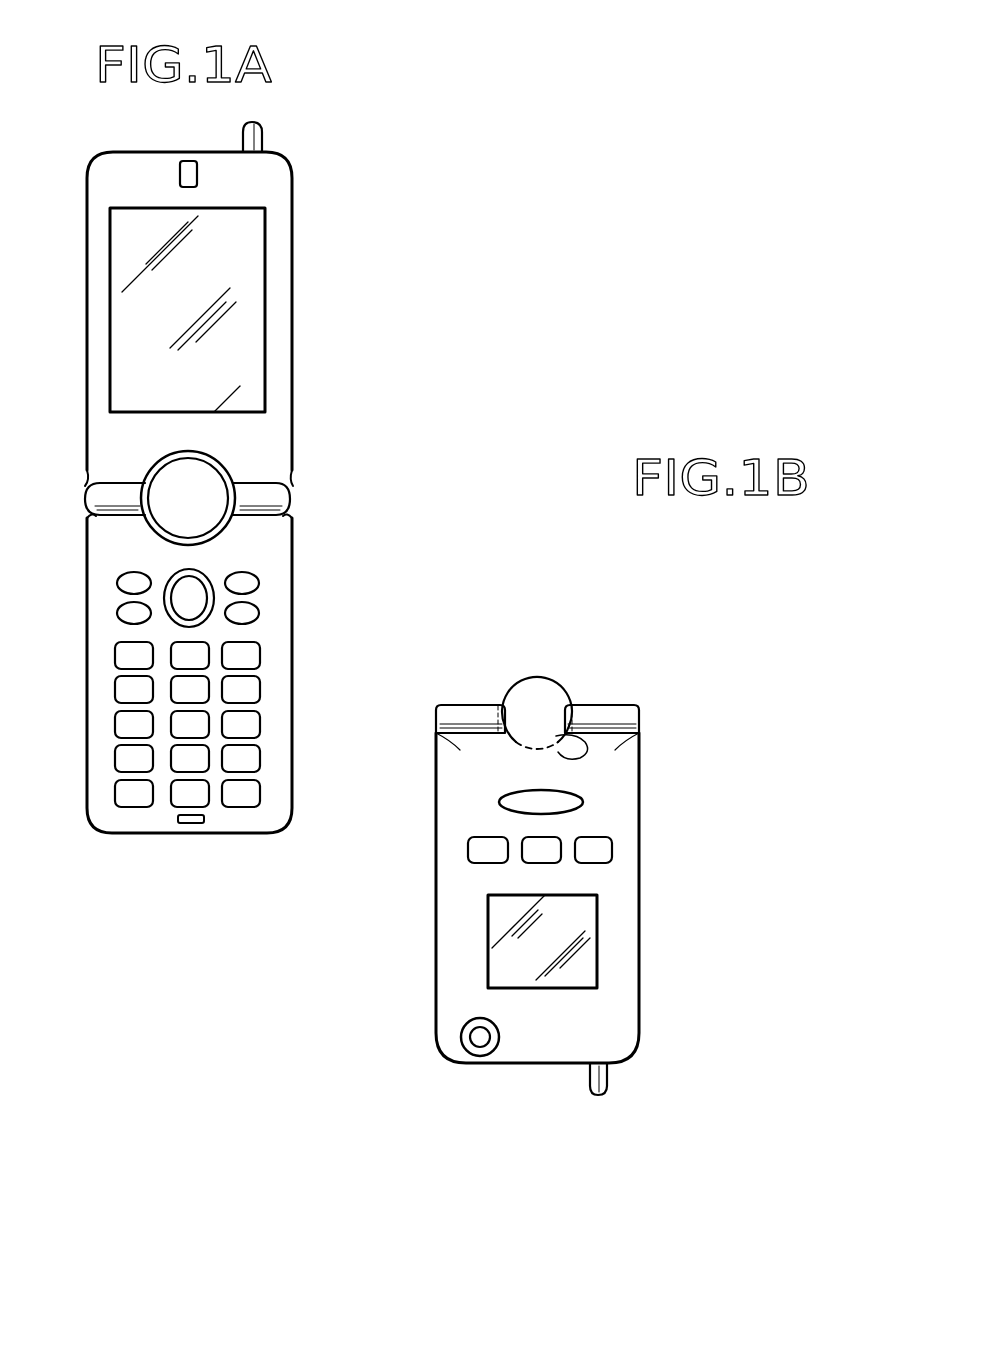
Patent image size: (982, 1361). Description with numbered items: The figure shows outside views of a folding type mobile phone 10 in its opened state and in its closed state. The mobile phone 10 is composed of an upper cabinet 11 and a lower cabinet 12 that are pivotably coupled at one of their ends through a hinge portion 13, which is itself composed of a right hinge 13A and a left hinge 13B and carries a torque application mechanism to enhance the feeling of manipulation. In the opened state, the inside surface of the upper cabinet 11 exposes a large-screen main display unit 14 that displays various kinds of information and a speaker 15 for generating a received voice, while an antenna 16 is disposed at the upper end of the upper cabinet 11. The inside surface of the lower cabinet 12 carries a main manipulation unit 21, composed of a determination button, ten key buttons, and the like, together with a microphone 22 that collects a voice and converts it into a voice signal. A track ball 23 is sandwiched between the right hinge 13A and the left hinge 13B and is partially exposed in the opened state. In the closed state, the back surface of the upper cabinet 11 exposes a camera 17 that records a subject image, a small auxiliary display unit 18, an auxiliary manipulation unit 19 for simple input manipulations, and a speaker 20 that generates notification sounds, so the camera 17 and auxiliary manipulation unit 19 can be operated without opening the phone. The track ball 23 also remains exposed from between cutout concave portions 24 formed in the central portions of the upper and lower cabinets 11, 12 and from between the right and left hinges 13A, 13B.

In FIG. 1A, the mobile phone 10 is at (372, 126).
In FIG. 1A, the upper cabinet 11 is at (293, 299).
In FIG. 1B, the upper cabinet 11 is at (436, 822).
In FIG. 1A, the lower cabinet 12 is at (223, 822).
In FIG. 1B, the hinge portion 13 is at (650, 677).
In FIG. 1A, the right hinge 13A is at (290, 498).
In FIG. 1B, the right hinge 13A is at (626, 714).
In FIG. 1A, the left hinge 13B is at (95, 499).
In FIG. 1B, the left hinge 13B is at (438, 704).
In FIG. 1A, the main display unit 14 is at (247, 230).
In FIG. 1A, the speaker 15 is at (198, 173).
In FIG. 1A, the antenna 16 is at (264, 134).
In FIG. 1B, the antenna 16 is at (608, 1080).
In FIG. 1B, the camera 17 is at (481, 1050).
In FIG. 1B, the auxiliary display unit 18 is at (584, 944).
In FIG. 1B, the auxiliary manipulation unit 19 is at (606, 860).
In FIG. 1B, the speaker 20 is at (583, 802).
In FIG. 1A, the main manipulation unit 21 is at (300, 797).
In FIG. 1A, the microphone 22 is at (190, 825).
In FIG. 1A, the track ball 23 is at (194, 470).
In FIG. 1B, the track ball 23 is at (551, 700).
In FIG. 1B, the cutout concave portion 24 is at (580, 755).